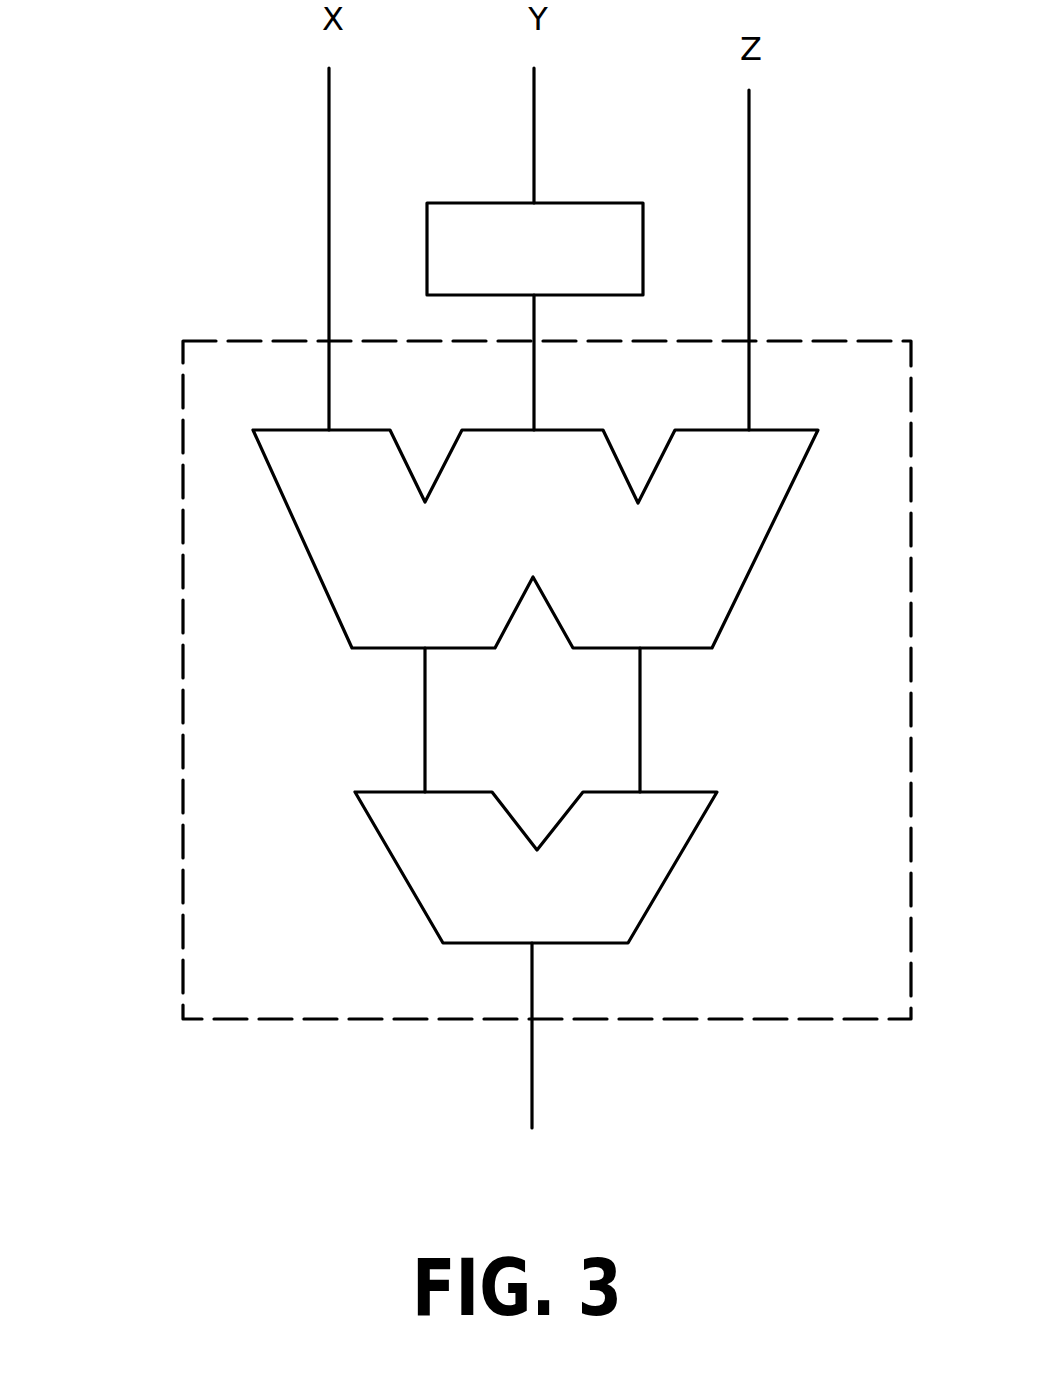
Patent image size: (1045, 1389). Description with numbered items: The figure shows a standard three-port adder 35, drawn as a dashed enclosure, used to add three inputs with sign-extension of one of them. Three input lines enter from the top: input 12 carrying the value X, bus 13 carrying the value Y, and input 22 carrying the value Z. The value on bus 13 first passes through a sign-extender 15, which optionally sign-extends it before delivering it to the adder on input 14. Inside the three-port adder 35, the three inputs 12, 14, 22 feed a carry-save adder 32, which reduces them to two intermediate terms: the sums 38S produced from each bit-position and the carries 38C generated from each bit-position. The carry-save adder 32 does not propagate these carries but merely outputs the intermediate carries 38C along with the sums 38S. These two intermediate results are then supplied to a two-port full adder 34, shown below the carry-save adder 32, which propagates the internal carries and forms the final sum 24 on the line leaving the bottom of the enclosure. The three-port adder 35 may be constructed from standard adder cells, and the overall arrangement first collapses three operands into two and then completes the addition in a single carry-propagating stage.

The input 12 is at (327, 258).
The bus 13 is at (535, 115).
The sign-extender 15 is at (643, 253).
The input 14 is at (535, 415).
The input 22 is at (750, 307).
The 3-port adder 35 is at (183, 583).
The carry-save adder 32 is at (726, 622).
The carries 38C is at (422, 748).
The sums 38S is at (642, 767).
The 2-port full adder 34 is at (668, 880).
The final sum 24 is at (534, 1057).